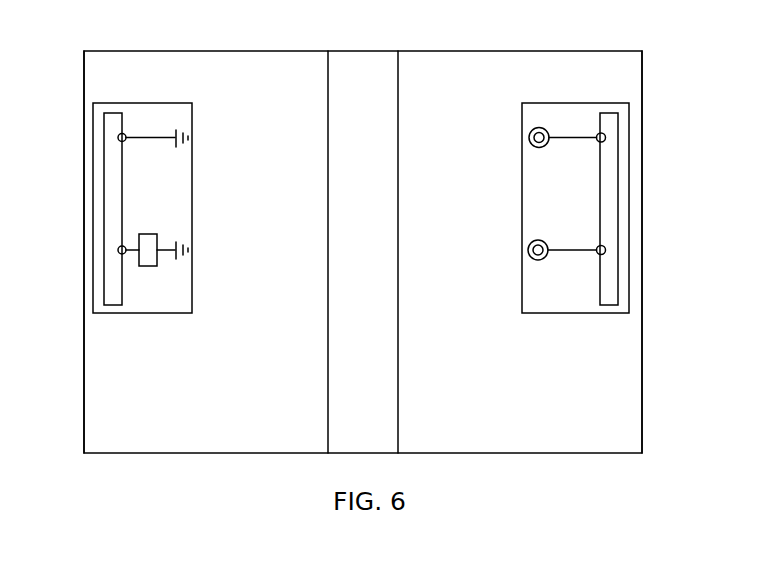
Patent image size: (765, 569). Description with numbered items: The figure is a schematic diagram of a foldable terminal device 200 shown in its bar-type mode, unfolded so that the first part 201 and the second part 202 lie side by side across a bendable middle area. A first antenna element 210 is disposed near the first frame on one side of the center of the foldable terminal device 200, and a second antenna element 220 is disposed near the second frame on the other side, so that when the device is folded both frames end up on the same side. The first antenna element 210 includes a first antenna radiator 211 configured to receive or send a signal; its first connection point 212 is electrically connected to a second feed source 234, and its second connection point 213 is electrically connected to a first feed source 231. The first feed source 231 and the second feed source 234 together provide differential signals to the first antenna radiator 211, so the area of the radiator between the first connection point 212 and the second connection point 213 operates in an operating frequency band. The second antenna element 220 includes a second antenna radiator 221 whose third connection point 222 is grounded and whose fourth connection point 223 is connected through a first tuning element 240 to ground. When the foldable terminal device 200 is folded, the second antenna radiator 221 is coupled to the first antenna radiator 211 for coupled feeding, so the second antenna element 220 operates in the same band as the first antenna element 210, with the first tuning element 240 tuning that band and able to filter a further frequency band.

The foldable terminal device 200 is at (381, 38).
The first part 201 is at (643, 337).
The second part 202 is at (83, 345).
The first antenna element 210 is at (533, 313).
The first antenna radiator 211 is at (618, 218).
The first connection point 212 is at (605, 139).
The second connection point 213 is at (602, 254).
The second antenna element 220 is at (185, 313).
The second antenna radiator 221 is at (102, 218).
The third connection point 222 is at (119, 140).
The fourth connection point 223 is at (121, 254).
The first feed source 231 is at (546, 131).
The second feed source 234 is at (545, 256).
The first tuning element 240 is at (146, 267).